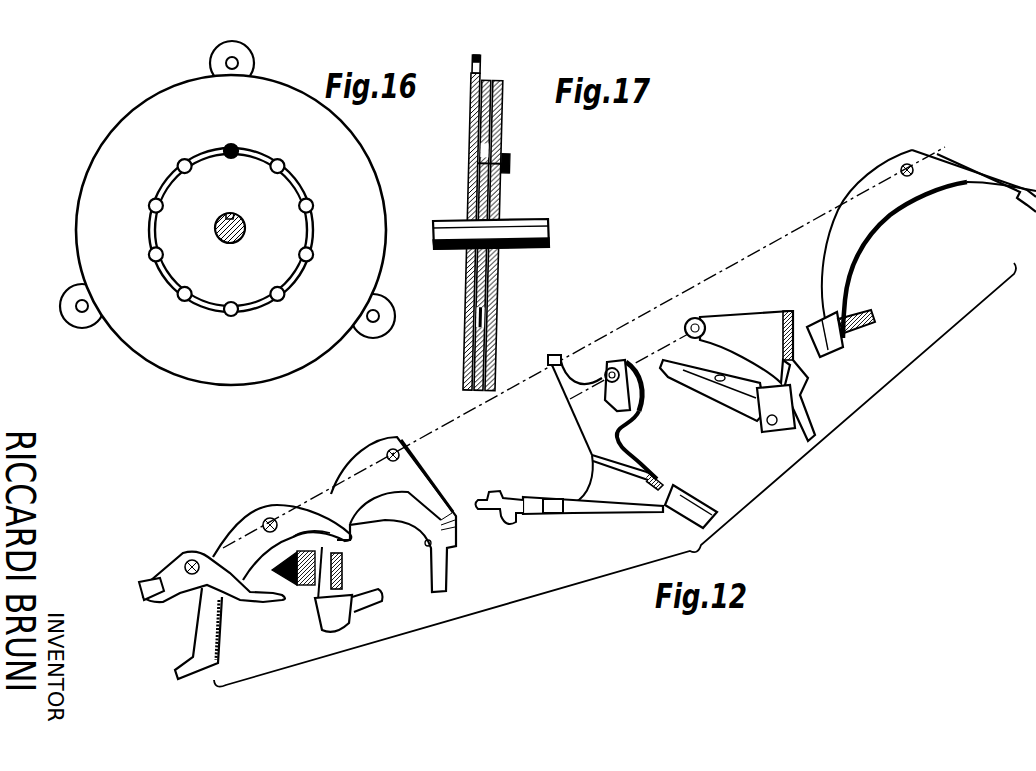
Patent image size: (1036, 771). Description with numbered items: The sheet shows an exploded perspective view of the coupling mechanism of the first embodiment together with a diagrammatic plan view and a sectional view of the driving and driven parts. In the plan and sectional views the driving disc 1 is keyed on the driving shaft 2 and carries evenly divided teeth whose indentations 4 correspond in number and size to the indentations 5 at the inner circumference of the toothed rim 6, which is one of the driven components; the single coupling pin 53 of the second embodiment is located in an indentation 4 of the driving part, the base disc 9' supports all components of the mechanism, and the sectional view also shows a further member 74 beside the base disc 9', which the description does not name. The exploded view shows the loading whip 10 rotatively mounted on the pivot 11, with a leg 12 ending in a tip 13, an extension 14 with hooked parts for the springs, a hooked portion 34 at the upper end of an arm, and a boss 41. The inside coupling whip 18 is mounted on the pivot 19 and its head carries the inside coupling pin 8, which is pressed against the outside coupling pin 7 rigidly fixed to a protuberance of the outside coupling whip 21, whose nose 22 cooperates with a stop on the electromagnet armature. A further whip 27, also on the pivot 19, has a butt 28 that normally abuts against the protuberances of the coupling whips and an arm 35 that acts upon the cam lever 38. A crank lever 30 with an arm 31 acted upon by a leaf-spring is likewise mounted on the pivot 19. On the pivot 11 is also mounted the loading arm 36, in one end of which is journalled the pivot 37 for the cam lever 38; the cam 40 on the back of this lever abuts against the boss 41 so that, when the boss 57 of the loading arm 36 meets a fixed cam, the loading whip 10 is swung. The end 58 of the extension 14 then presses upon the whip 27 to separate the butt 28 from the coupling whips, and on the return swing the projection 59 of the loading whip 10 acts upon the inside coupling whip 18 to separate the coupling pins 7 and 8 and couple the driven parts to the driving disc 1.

In FIG. 16, the driving disc 1 is at (172, 187).
In FIG. 17, the driving disc 1 is at (493, 196).
In FIG. 16, the driving shaft 2 is at (246, 228).
In FIG. 17, the driving shaft 2 is at (536, 243).
In FIG. 16, the indentations 4 is at (184, 289).
In FIG. 16, the indentations 5 is at (226, 312).
In FIG. 16, the toothed rim 6 is at (352, 152).
In FIG. 17, the toothed rim 6 is at (470, 112).
In FIG. 12, the outside coupling pin 7 is at (876, 318).
In FIG. 12, the inside coupling pin 8 is at (381, 597).
In FIG. 17, the base disc 9' is at (513, 236).
In FIG. 12, the loading whip 10 is at (585, 425).
In FIG. 12, the pivot 11 is at (661, 347).
In FIG. 12, the leg 12 is at (690, 509).
In FIG. 12, the tip 13 is at (718, 521).
In FIG. 12, the extension 14 is at (522, 502).
In FIG. 12, the inside coupling whip 18 is at (418, 482).
In FIG. 12, the pivot 19 is at (612, 330).
In FIG. 12, the outside coupling whip 21 is at (838, 266).
In FIG. 12, the nose 22 is at (822, 357).
In FIG. 12, the whip 27 is at (238, 531).
In FIG. 12, the butt 28 is at (176, 670).
In FIG. 12, the crank lever 30 is at (172, 576).
In FIG. 12, the arm 31 is at (142, 593).
In FIG. 12, the hooked portion 34 is at (551, 356).
In FIG. 12, the arm 35 is at (352, 539).
In FIG. 12, the loading arm 36 is at (760, 330).
In FIG. 12, the pivot 37 is at (770, 434).
In FIG. 12, the cam lever 38 is at (740, 404).
In FIG. 12, the cam 40 is at (719, 376).
In FIG. 12, the boss 41 is at (641, 421).
In FIG. 16, the coupling pin 53 is at (232, 148).
In FIG. 12, the boss 57 is at (787, 309).
In FIG. 12, the end 58 is at (476, 513).
In FIG. 12, the projection 59 is at (556, 514).
In FIG. 17, the bar 74 is at (471, 196).